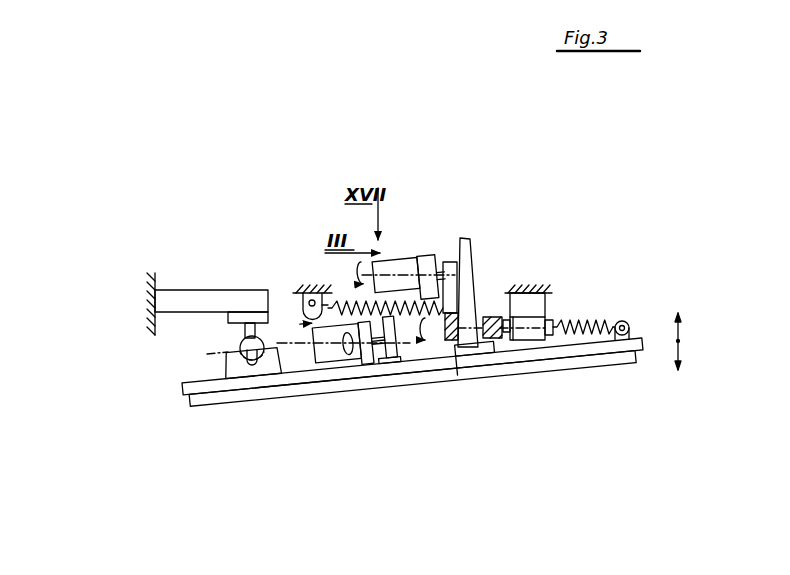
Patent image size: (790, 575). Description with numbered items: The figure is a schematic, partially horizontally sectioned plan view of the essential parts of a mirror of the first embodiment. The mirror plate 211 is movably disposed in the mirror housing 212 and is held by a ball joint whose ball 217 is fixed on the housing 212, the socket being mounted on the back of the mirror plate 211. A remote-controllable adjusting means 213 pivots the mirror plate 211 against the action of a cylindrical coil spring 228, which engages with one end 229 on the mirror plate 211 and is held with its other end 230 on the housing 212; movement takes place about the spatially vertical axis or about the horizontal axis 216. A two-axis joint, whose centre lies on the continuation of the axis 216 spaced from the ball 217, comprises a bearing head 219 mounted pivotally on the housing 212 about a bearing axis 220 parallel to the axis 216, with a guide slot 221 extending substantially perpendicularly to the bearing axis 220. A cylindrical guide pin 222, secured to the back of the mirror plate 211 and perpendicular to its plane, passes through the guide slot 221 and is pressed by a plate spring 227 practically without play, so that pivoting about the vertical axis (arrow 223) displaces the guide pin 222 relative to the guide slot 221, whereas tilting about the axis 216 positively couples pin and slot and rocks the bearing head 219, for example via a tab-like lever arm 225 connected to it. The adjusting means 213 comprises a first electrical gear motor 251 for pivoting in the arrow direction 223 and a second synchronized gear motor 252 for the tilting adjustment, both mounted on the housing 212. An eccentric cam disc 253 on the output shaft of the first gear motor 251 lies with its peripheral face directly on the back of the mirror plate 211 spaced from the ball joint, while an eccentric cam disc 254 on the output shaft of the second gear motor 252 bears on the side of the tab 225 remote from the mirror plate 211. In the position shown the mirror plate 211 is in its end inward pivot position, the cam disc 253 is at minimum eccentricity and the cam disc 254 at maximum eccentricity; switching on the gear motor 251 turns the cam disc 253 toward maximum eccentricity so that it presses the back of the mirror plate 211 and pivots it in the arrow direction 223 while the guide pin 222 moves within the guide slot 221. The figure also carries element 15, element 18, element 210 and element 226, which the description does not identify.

The ball pin 15 is at (247, 365).
The socket block 18 is at (268, 372).
The upper guide rail 210 is at (435, 424).
The mirror plate 211 is at (467, 430).
The mirror housing 212 is at (155, 297).
The remote-controllable adjusting means 213 is at (422, 232).
The horizontal axis 216 is at (207, 354).
The ball 217 is at (238, 347).
The bearing head 219 is at (573, 401).
The bearing axis 220 is at (597, 235).
The guide slot 221 is at (522, 415).
The cylindrical guide pin 222 is at (468, 240).
The arrow 223 is at (683, 341).
The tab-like lever arm 225 is at (451, 340).
The lever base 226 is at (516, 253).
The plate spring 227 is at (483, 340).
The cylindrical coil spring 228 is at (638, 270).
The one end of coil spring 229 is at (668, 300).
The other end of coil spring 230 is at (307, 295).
The first electrical gear motor 251 is at (325, 355).
The second synchronized gear motor 252 is at (392, 262).
The eccentric cam disc 253 is at (392, 363).
The eccentric cam disc 254 is at (446, 262).